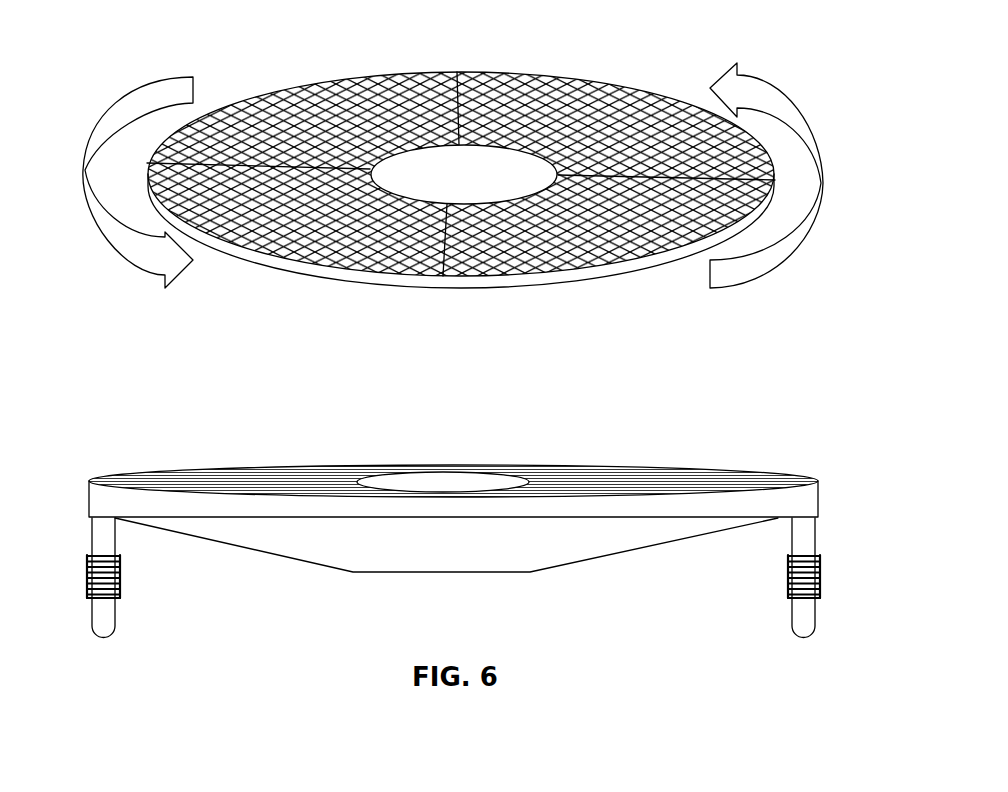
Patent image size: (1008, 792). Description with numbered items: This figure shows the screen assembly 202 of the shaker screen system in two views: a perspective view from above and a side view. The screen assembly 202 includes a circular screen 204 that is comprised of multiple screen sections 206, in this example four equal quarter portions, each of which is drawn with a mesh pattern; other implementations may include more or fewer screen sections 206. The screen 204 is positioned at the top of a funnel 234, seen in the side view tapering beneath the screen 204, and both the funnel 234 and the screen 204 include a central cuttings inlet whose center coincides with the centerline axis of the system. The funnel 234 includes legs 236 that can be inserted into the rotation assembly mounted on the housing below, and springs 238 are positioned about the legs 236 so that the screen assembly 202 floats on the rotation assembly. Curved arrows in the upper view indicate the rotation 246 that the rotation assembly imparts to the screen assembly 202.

The screen assembly 202 is at (469, 523).
The screen 204 is at (453, 262).
The screen sections 206 is at (377, 88).
The funnel 234 is at (670, 544).
The legs 236 is at (92, 616).
The springs 238 is at (87, 581).
The rotation 246 is at (786, 264).